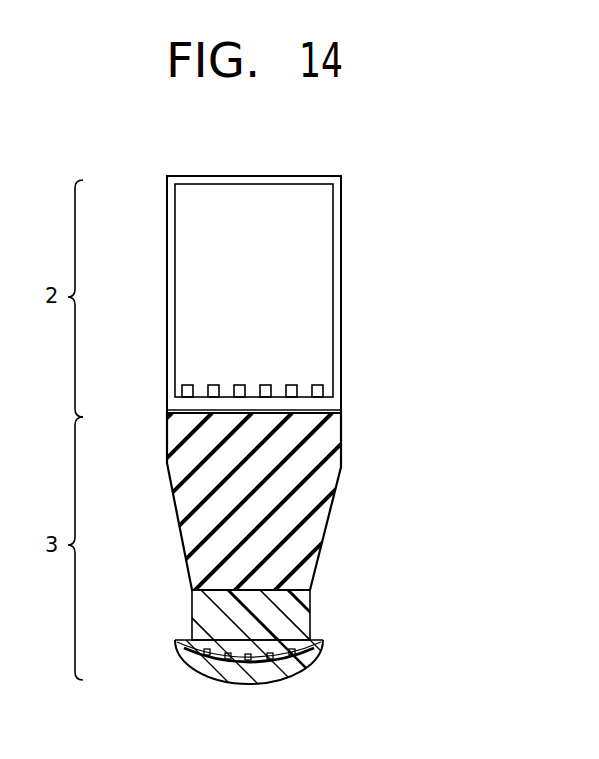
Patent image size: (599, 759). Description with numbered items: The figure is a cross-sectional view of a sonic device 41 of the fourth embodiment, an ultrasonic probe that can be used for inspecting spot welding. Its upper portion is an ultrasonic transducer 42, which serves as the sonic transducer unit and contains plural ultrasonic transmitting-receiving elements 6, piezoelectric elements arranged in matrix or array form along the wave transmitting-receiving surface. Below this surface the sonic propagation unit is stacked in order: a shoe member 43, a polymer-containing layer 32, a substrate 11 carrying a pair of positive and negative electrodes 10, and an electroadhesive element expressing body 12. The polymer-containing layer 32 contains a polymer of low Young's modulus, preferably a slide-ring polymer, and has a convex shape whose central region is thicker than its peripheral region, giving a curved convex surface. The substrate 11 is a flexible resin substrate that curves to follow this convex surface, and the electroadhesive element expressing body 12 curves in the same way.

The sonic device 41 is at (358, 165).
The ultrasonic transducer 42 is at (340, 268).
The ultrasonic transmitting-receiving element 6 is at (320, 390).
The shoe member 43 is at (323, 447).
The polymer-containing layer 32 is at (310, 605).
The substrate 11 is at (325, 640).
The electroadhesive element expressing body 12 is at (293, 673).
The electrodes 10 is at (250, 663).